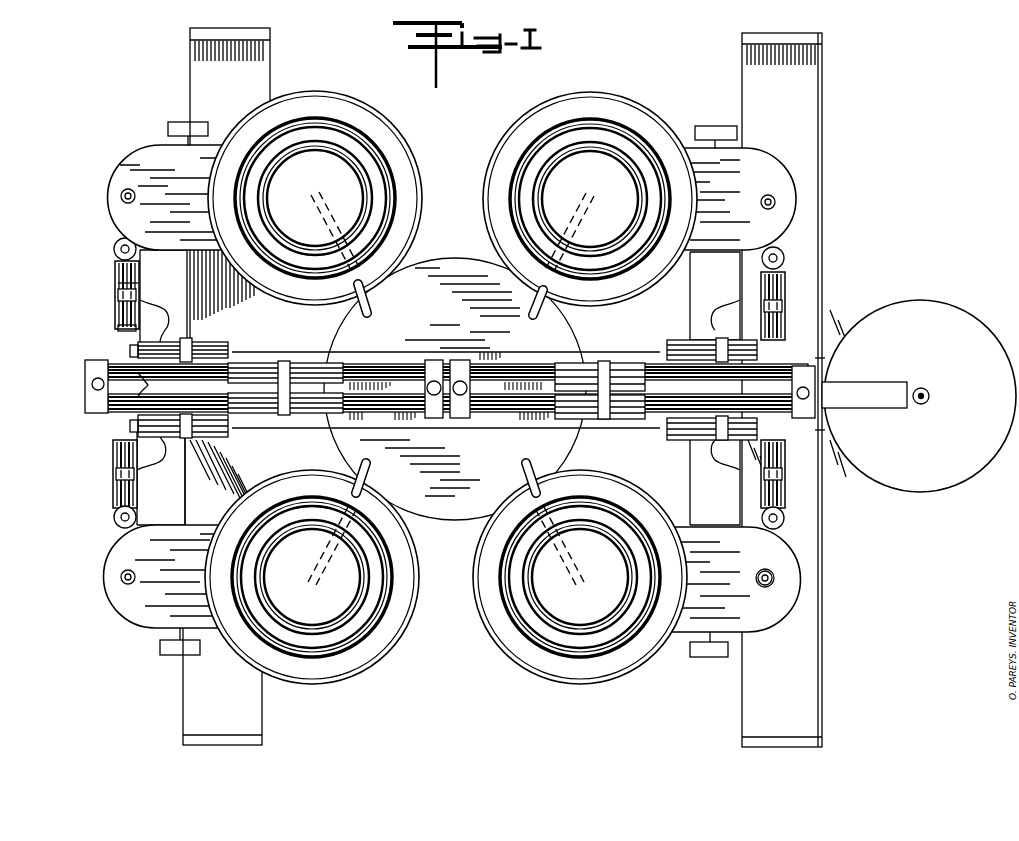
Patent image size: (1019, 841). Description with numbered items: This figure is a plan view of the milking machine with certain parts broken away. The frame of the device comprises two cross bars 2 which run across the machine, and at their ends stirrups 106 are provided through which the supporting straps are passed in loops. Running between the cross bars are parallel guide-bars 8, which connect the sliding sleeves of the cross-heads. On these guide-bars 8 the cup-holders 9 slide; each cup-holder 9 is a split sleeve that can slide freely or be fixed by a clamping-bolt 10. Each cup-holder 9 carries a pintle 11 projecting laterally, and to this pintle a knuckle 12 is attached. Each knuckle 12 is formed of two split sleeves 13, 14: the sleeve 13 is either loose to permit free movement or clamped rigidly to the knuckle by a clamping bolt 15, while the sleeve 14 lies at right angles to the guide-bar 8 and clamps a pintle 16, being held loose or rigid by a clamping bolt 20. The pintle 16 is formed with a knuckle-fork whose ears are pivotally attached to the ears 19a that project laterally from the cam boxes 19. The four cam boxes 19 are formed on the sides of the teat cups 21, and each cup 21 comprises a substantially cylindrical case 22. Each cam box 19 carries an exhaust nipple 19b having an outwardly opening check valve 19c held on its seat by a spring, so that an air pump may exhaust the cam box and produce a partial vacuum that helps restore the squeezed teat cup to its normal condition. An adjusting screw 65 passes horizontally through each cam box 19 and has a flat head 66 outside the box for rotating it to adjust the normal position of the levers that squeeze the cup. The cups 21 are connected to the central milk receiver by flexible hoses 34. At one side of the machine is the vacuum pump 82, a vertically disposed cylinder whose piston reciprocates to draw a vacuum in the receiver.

The cross bar 2 is at (506, 387).
The guide-bar 8 is at (535, 372).
The cup-holder 9 is at (280, 366).
The clamping-bolt 10 is at (318, 354).
The pintle 11 is at (138, 350).
The knuckle 12 is at (438, 387).
The split sleeve 13 is at (200, 352).
The split sleeve 14 is at (118, 283).
The clamping bolt 15 is at (190, 345).
The pintle 16 is at (116, 330).
The cam box 19 is at (145, 172).
The ear 19a is at (826, 530).
The exhaust nipple 19b is at (775, 578).
The check valve 19c is at (758, 579).
The clamping bolt 20 is at (137, 282).
The cup 21 is at (451, 399).
The case 22 is at (480, 215).
The flexible hose 34 is at (545, 470).
The adjusting screw 65 is at (695, 140).
The flat head 66 is at (707, 658).
The vacuum pump 82 is at (919, 396).
The stirrup 106 is at (262, 737).